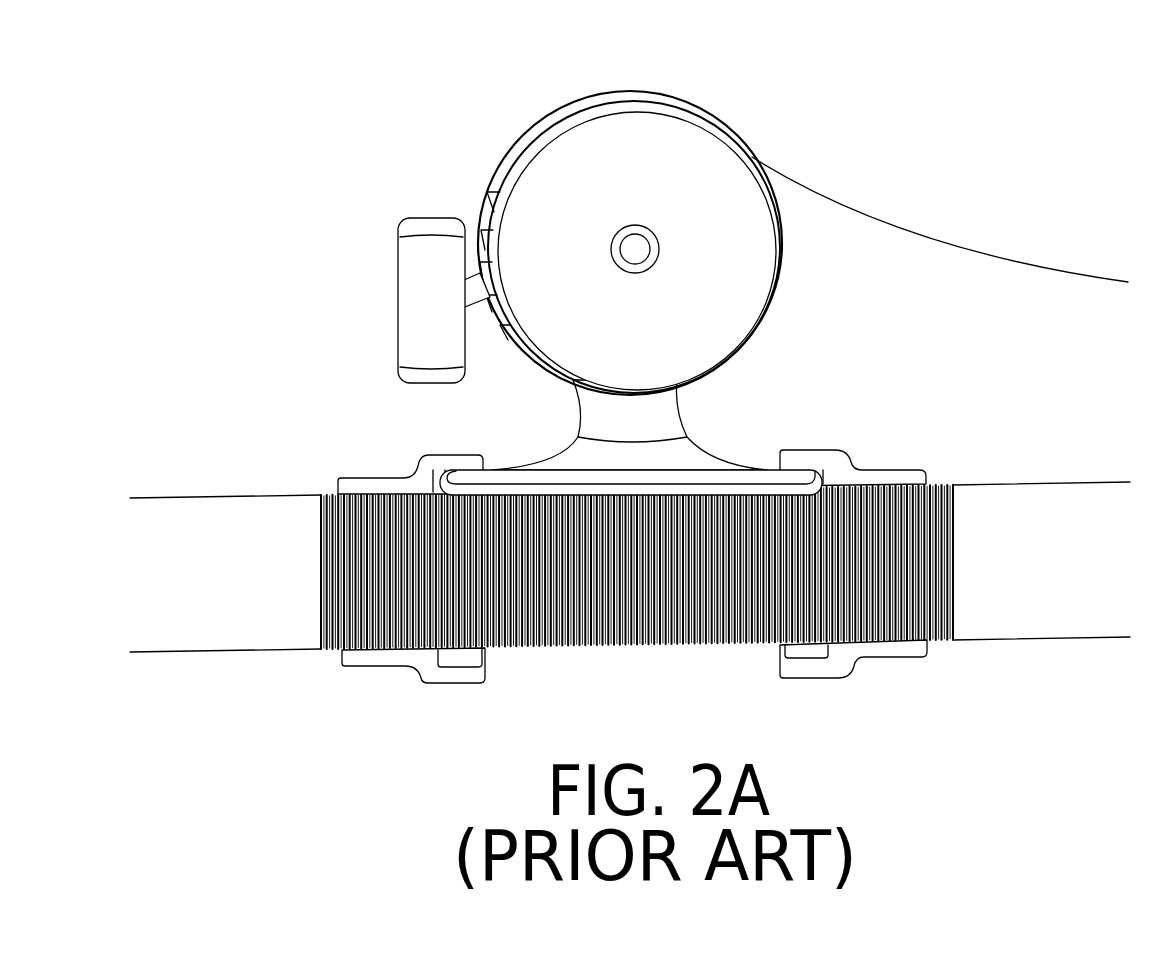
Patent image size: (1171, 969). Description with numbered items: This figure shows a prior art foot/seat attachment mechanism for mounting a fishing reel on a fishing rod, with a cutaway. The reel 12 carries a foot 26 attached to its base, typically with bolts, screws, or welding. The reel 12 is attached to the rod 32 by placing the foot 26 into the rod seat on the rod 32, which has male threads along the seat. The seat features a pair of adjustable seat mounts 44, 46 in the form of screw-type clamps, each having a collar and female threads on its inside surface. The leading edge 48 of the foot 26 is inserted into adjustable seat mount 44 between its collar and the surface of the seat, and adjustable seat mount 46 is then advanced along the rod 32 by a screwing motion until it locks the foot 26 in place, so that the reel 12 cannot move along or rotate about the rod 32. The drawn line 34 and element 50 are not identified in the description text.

The reel 12 is at (685, 163).
The foot 26 is at (675, 445).
The rod 32 is at (1053, 573).
The fishing line 34 is at (978, 250).
The adjustable seat mount 44 is at (883, 478).
The adjustable seat mount 46 is at (355, 487).
The leading edge 48 is at (773, 477).
The reel foot 50 is at (473, 482).